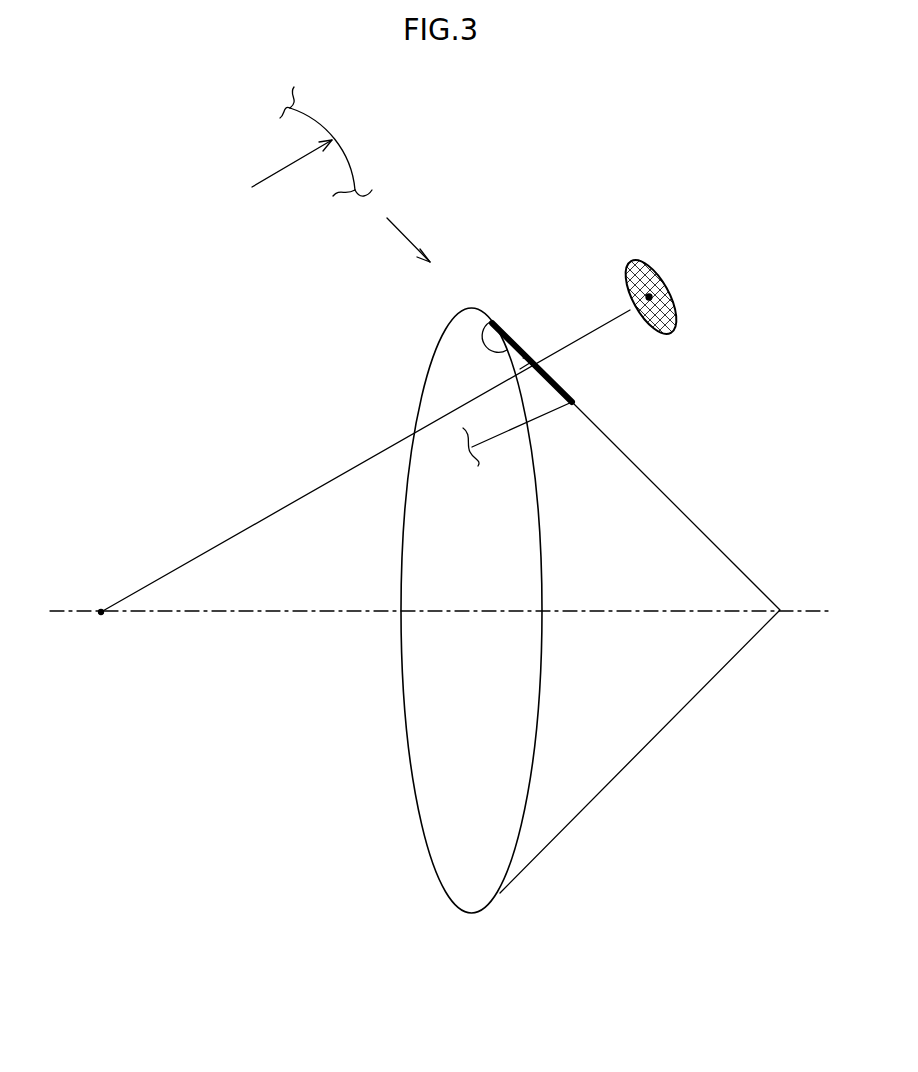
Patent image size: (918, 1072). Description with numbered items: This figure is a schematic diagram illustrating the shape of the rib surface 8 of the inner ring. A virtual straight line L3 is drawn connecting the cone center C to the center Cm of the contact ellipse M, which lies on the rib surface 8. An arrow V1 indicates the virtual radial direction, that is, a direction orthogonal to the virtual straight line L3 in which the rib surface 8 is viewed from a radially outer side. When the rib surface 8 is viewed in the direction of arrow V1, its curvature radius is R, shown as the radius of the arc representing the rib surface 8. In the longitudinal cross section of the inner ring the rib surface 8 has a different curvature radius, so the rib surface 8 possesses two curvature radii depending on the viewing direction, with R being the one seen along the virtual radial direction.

The rib surface 8 is at (492, 323).
The contact ellipse M is at (656, 272).
The center of the contact ellipse Cm is at (652, 298).
The cone center C is at (101, 618).
The virtual straight line L3 is at (352, 467).
The arrow V1 is at (412, 235).
The curvature radius R is at (312, 289).